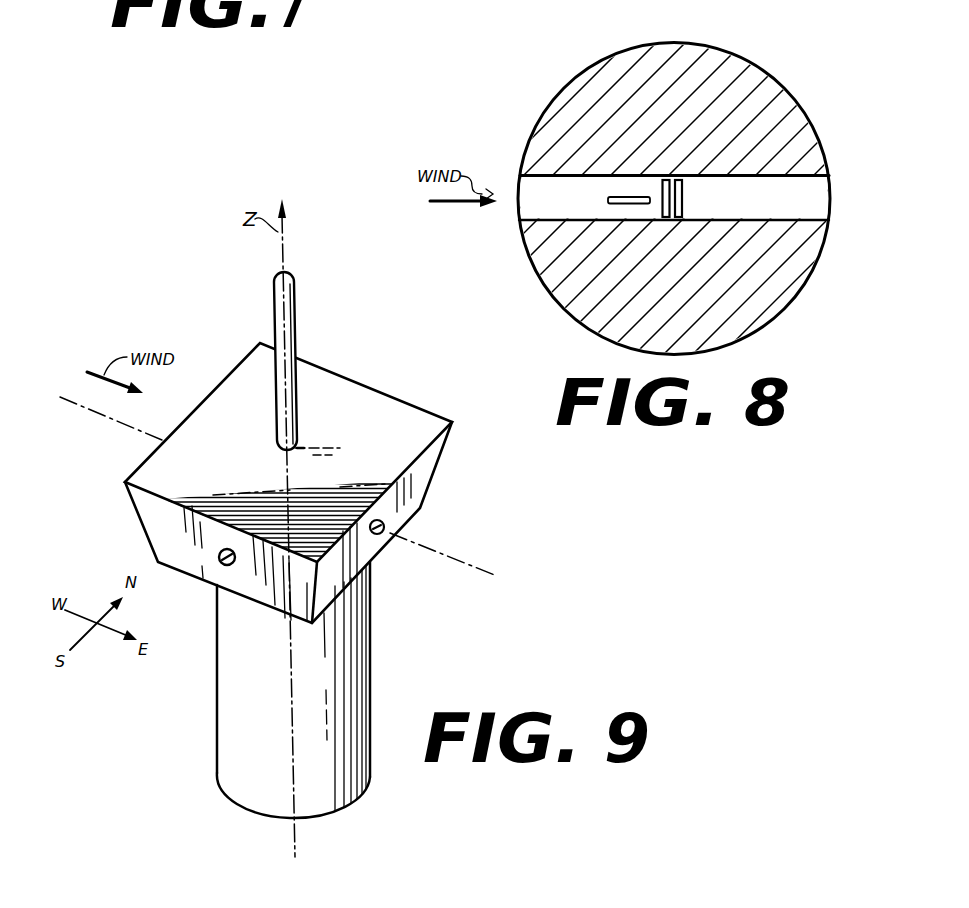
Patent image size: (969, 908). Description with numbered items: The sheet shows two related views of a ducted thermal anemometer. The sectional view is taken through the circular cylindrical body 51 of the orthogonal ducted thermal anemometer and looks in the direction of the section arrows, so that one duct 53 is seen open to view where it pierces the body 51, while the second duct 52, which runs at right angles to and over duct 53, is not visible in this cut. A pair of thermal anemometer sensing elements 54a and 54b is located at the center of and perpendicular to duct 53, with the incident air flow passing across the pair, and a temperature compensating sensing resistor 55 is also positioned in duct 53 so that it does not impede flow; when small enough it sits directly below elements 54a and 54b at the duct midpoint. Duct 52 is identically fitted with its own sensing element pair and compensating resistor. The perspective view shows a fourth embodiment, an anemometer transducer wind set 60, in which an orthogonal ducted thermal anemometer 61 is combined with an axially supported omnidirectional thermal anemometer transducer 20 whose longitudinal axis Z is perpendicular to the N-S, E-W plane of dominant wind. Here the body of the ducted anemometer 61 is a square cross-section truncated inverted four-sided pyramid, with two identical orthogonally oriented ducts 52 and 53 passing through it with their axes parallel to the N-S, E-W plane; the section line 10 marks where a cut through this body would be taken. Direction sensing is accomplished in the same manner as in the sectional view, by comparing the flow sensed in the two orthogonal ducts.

In FIG. 9, the section line 10- 10 is at (68, 392).
In FIG. 9, the omnidirectional thermal anemometer transducer 20 is at (298, 283).
In FIG. 8, the circular cylindrical body 51 is at (773, 103).
In FIG. 9, the duct 52 is at (221, 564).
In FIG. 8, the duct 53 is at (807, 197).
In FIG. 9, the duct 53 is at (384, 525).
In FIG. 8, the thermal anemometer sensing element 54a is at (660, 186).
In FIG. 8, the thermal anemometer sensing element 54b is at (683, 197).
In FIG. 8, the temperature compensating sensing resistor 55 is at (608, 203).
In FIG. 9, the anemometer transducer wind set 60 is at (374, 666).
In FIG. 9, the orthogonal ducted thermal anemometer 61 is at (347, 397).